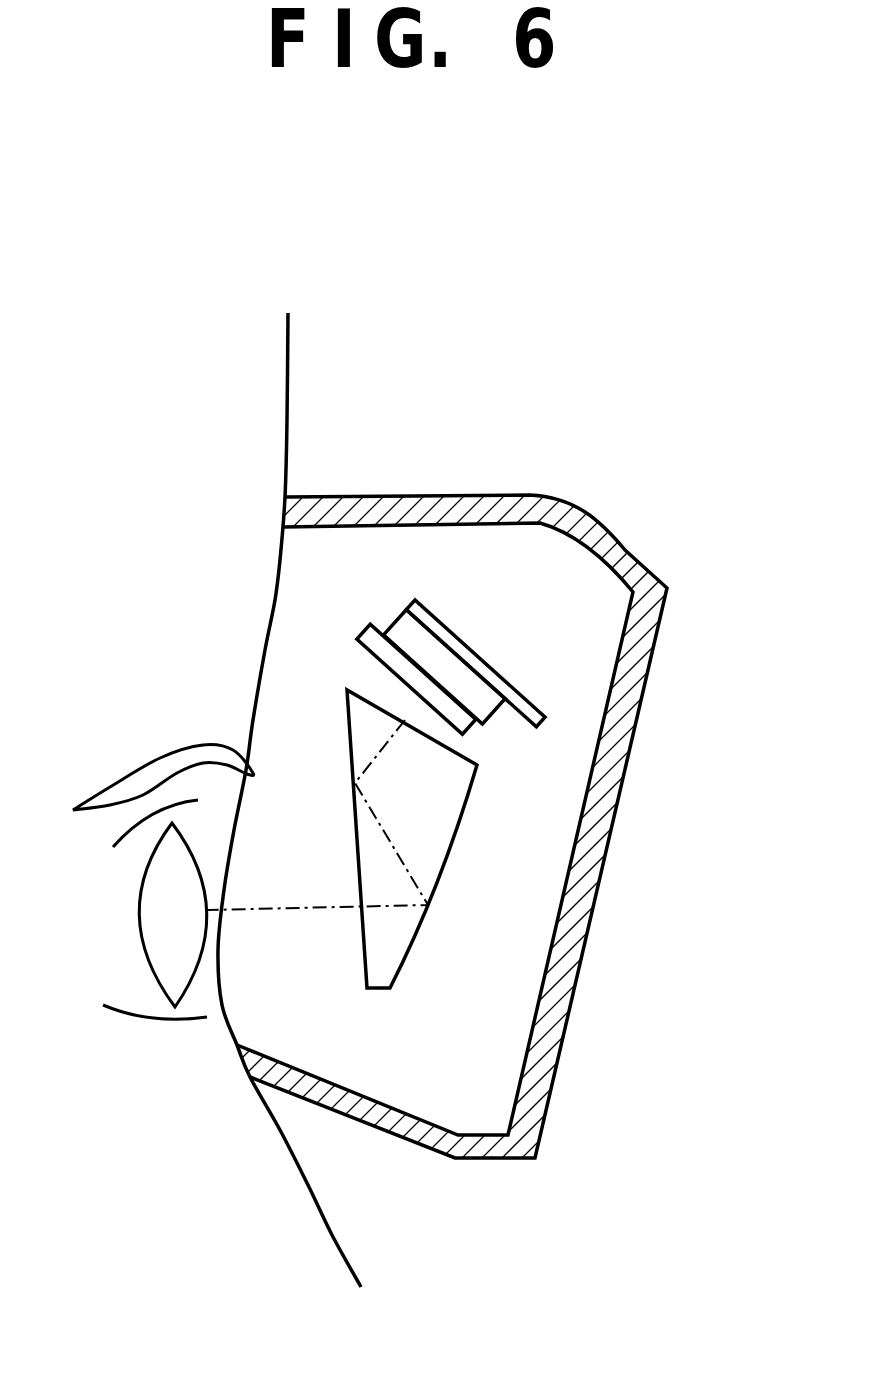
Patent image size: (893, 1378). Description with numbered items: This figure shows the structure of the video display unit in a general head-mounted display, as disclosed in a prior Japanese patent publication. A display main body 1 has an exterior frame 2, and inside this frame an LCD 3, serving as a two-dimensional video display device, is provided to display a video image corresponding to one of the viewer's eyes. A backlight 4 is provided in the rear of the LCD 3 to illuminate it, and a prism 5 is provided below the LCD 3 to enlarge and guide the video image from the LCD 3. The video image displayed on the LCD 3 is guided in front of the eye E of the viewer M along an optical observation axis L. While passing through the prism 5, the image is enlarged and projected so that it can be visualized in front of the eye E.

The display main body 1 is at (446, 771).
The exterior frame 2 is at (437, 497).
The LCD 3 is at (468, 733).
The backlight 4 is at (452, 673).
The prism 5 is at (455, 780).
The viewer M is at (243, 370).
The eye E is at (178, 972).
The optical observation axis L is at (368, 767).